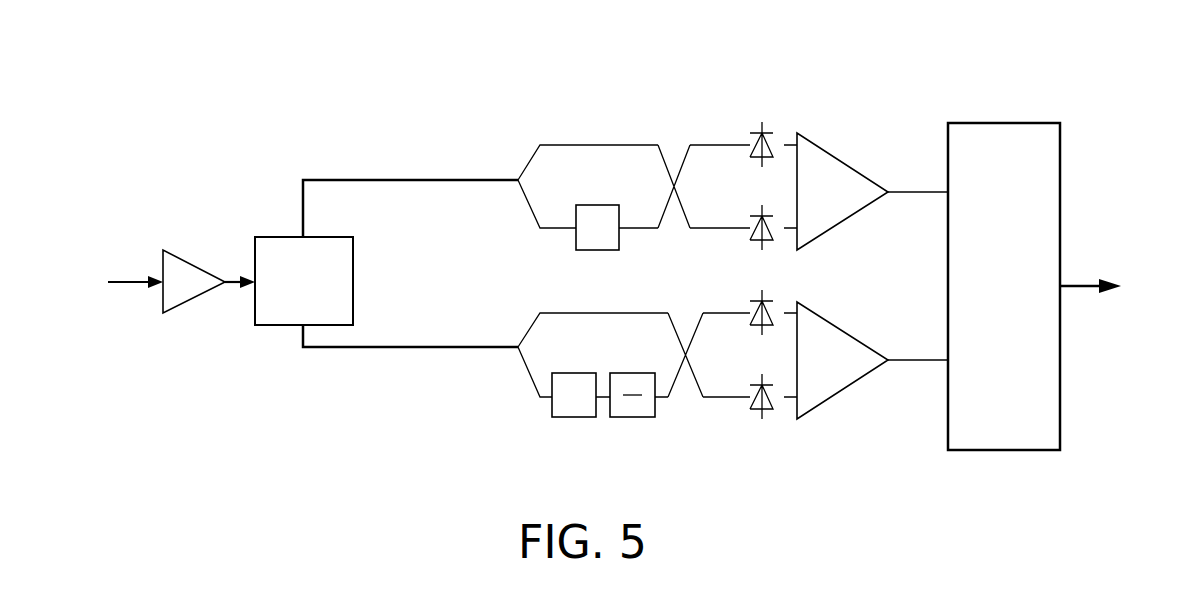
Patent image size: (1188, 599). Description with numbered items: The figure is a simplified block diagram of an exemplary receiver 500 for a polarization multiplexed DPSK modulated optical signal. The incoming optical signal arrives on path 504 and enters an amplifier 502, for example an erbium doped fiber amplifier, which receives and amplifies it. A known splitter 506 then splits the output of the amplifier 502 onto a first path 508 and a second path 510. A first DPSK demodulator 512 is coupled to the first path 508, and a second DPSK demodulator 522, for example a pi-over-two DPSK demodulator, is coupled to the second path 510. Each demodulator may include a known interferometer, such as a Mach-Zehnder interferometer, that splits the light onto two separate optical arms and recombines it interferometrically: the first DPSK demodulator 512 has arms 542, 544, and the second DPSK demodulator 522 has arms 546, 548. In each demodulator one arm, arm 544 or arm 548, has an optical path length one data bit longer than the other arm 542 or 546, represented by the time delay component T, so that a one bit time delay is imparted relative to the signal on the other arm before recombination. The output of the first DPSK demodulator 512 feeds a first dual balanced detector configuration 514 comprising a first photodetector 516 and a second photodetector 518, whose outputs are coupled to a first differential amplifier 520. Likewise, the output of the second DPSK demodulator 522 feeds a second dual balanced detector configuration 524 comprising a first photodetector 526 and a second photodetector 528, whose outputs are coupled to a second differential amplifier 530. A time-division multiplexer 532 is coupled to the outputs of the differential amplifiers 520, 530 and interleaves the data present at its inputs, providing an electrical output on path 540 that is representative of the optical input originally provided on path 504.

The receiver 500 is at (302, 72).
The amplifier 502 is at (195, 266).
The path 504 is at (135, 279).
The splitter 506 is at (282, 237).
The first path 508 is at (347, 180).
The second path 510 is at (360, 348).
The first DPSK demodulator 512 is at (568, 132).
The first dual balanced detector configuration 514 is at (722, 107).
The first photodetector 516 is at (750, 139).
The second photodetector 518 is at (750, 237).
The first differential amplifier 520 is at (830, 148).
The second DPSK demodulator 522 is at (536, 432).
The second dual balanced detector configuration 524 is at (753, 447).
The first photodetector 526 is at (787, 305).
The second photodetector 528 is at (770, 410).
The second differential amplifier 530 is at (848, 386).
The time-division multiplexer 532 is at (1005, 452).
The path 540 is at (1083, 283).
The optical path/arm 542 is at (523, 170).
The optical path/arm 544 is at (530, 217).
The optical path/arm 546 is at (523, 335).
The optical path/arm 548 is at (528, 380).